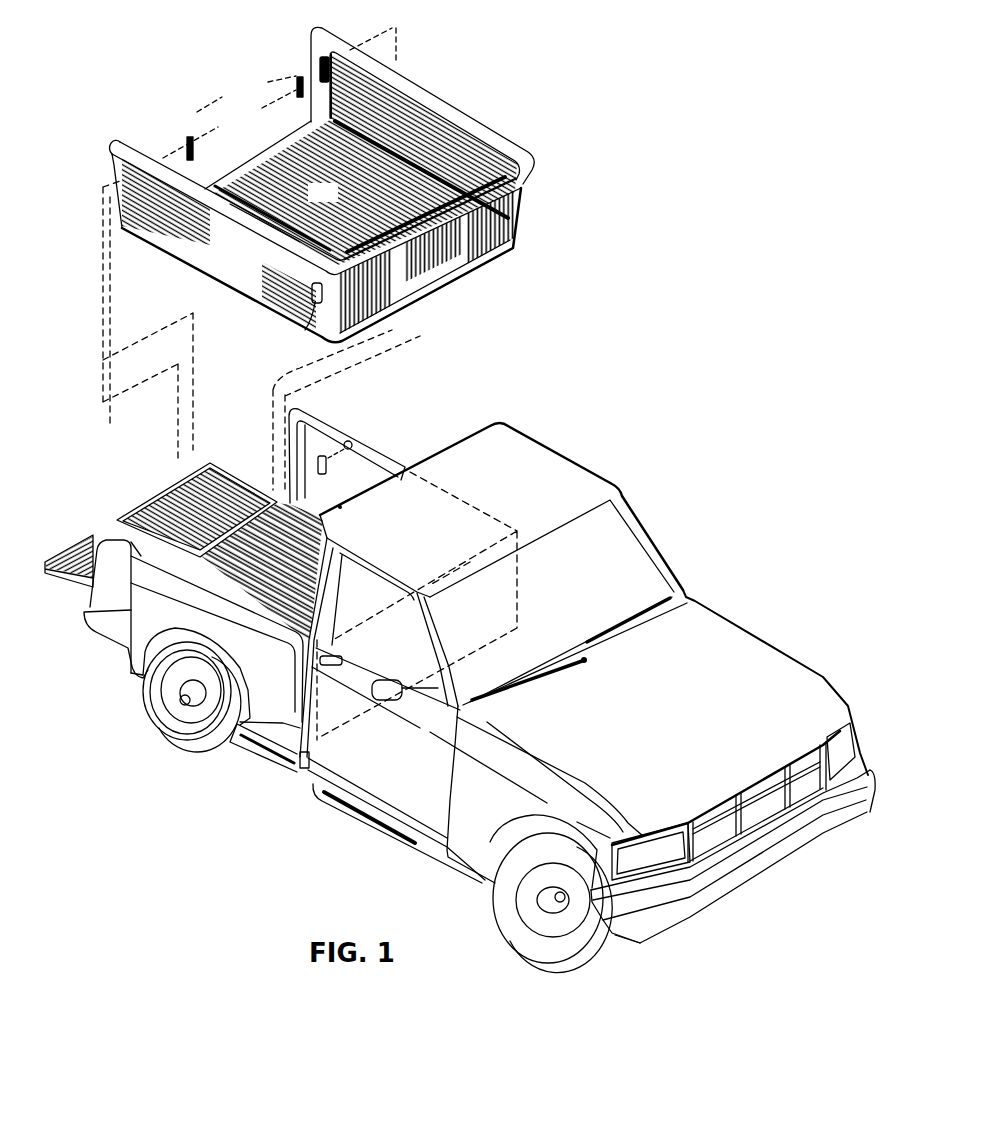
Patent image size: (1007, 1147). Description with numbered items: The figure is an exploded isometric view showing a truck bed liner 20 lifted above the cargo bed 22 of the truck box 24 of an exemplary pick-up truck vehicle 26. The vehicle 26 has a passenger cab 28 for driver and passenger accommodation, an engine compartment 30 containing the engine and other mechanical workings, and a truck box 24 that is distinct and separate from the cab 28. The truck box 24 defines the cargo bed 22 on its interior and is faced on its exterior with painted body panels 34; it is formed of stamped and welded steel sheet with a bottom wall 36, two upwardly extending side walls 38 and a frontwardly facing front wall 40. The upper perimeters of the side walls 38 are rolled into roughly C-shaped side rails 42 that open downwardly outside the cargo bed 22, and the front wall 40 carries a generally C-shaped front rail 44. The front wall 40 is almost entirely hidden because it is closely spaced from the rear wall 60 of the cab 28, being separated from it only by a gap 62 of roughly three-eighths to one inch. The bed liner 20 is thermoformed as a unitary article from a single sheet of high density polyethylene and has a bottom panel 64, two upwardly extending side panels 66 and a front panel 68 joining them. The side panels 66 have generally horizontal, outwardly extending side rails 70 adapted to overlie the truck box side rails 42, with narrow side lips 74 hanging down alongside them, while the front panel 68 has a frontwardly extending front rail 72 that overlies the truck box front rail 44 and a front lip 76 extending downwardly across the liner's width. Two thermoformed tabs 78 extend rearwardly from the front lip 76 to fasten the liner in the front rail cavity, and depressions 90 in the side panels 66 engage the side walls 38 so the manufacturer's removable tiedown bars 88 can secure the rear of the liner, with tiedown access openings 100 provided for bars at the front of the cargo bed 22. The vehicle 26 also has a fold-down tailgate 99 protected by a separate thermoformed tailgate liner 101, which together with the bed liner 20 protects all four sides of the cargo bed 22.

The truck bed liner 20 is at (463, 72).
The cargo bed 22 is at (353, 445).
The truck box 24 is at (318, 425).
The vehicle 26 is at (590, 452).
The passenger cab 28 is at (514, 424).
The engine compartment 30 is at (740, 625).
The painted body panels 34 is at (95, 606).
The bottom wall 36 is at (240, 586).
The side walls 38 is at (307, 502).
The front wall 40 is at (530, 583).
The side rails 42 is at (388, 462).
The front rail 44 is at (445, 571).
The rear wall 60 is at (283, 723).
The gap 62 is at (303, 770).
The bottom panel 64 is at (313, 201).
The side panels 66 is at (400, 92).
The front panel 68 is at (448, 272).
The side rails 70 is at (495, 137).
The front rail 72 is at (386, 246).
The side lips 74 is at (263, 239).
The front lip 76 is at (362, 320).
The tabs 78 is at (521, 186).
The tiedown bars 88 is at (192, 142).
The depressions 90 is at (321, 64).
The fold-down tailgate 99 is at (189, 495).
The tiedown access openings 100 is at (310, 313).
The tailgate liner 101 is at (160, 507).